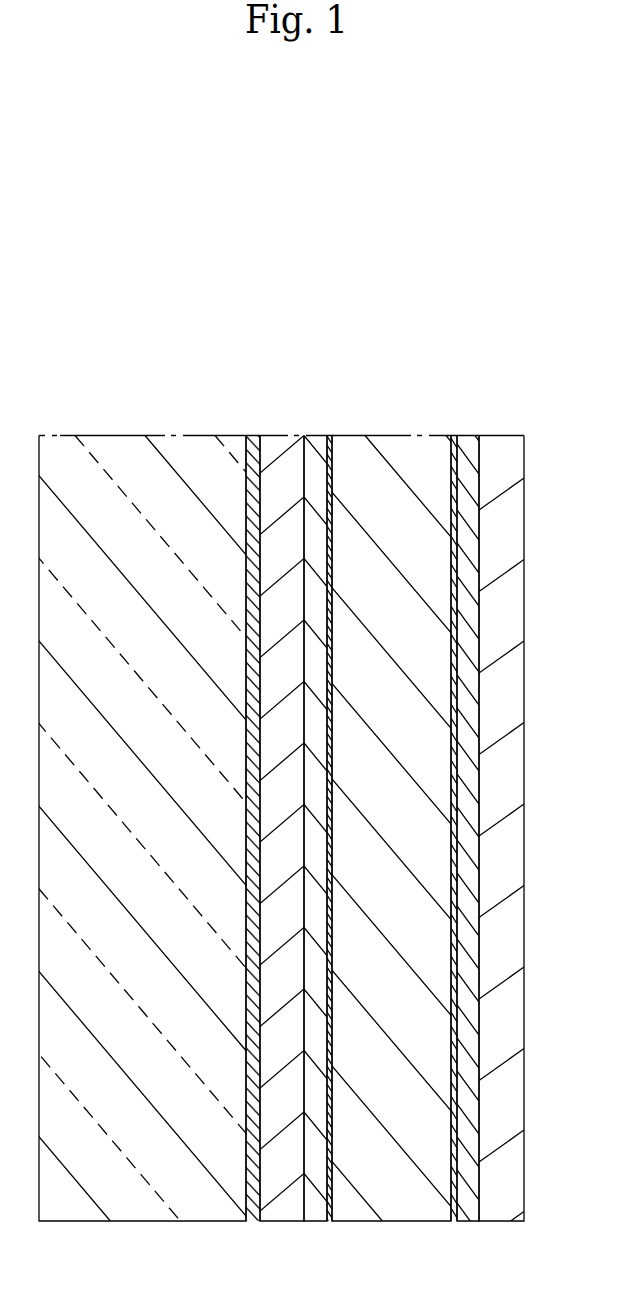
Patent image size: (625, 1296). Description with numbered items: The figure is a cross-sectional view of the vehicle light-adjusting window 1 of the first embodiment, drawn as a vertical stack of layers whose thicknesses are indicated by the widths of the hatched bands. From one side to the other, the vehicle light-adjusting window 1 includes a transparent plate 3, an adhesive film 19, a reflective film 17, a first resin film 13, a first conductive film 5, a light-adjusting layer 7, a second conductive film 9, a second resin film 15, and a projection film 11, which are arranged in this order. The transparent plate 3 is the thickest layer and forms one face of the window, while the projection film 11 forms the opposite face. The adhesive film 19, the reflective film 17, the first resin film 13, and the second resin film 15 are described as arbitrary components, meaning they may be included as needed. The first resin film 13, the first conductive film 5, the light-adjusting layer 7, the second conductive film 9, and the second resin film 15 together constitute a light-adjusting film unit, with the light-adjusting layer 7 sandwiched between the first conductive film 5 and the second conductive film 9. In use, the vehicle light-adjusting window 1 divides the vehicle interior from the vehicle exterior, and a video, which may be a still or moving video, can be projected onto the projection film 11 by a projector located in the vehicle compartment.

The vehicle light-adjusting window 1 is at (115, 328).
The transparent plate 3 is at (147, 453).
The first conductive film 5 is at (328, 442).
The light-adjusting layer 7 is at (392, 443).
The second conductive film 9 is at (455, 442).
The projection film 11 is at (503, 440).
The first resin film 13 is at (317, 440).
The second resin film 15 is at (468, 442).
The reflective film 17 is at (282, 440).
The adhesive film 19 is at (253, 438).